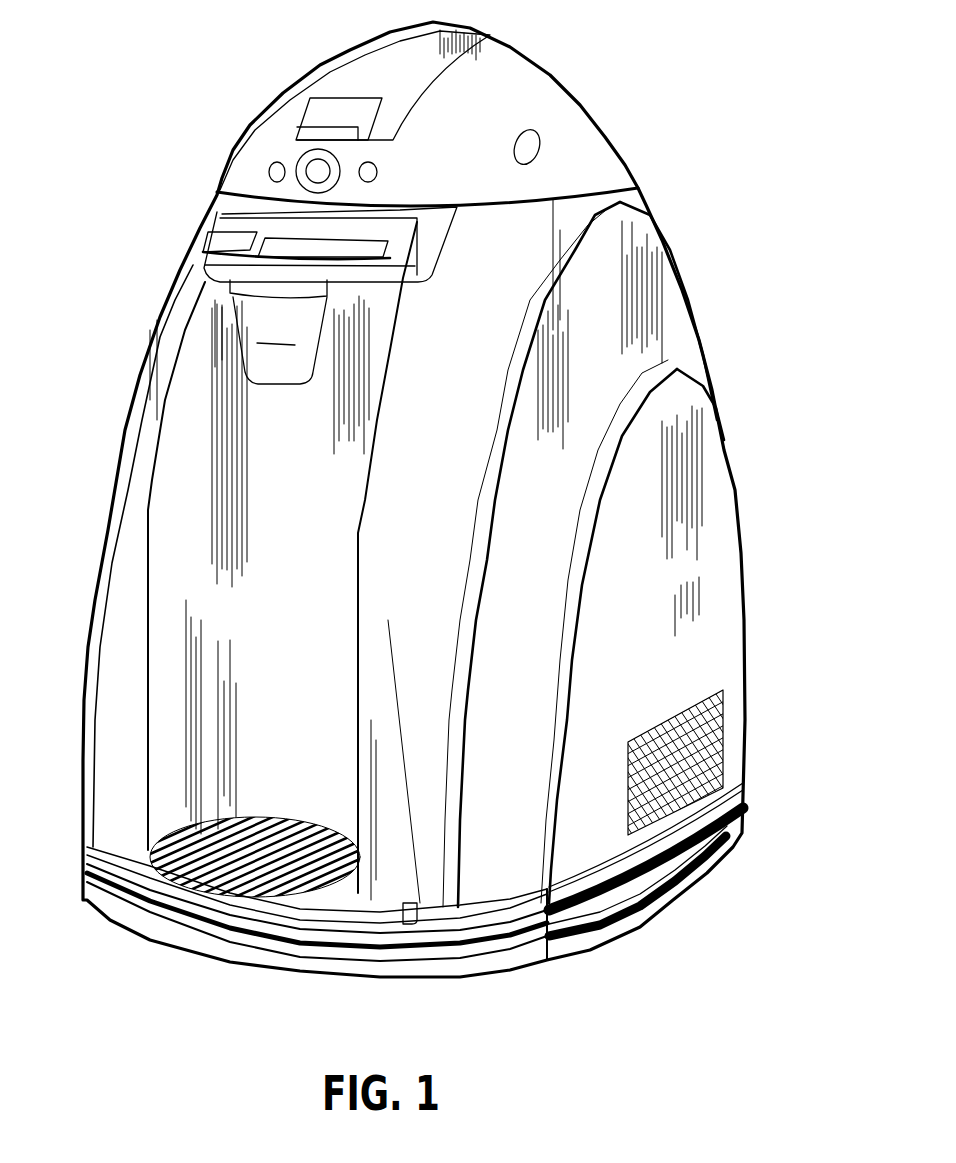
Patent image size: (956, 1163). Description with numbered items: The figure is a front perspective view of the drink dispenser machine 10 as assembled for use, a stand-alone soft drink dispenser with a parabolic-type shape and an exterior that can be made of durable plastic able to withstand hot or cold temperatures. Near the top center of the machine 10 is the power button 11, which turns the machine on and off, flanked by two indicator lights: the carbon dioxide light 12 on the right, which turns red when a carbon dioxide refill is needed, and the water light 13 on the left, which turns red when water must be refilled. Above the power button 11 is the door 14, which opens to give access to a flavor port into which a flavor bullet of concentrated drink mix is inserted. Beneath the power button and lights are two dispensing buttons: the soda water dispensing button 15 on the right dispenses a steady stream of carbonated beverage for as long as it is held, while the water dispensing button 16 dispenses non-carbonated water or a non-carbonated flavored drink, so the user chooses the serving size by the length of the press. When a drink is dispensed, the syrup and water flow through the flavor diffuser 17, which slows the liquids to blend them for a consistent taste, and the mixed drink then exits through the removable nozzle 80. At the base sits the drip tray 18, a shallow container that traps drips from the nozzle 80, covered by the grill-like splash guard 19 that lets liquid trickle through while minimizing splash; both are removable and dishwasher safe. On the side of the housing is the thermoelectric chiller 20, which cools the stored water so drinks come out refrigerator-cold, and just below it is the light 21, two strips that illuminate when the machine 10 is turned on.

The drink dispenser machine 10 is at (772, 59).
The power button 11 is at (315, 168).
The carbon dioxide light 12 is at (377, 171).
The water light 13 is at (268, 171).
The door 14 is at (330, 108).
The soda water dispensing button 15 is at (262, 250).
The water dispensing button 16 is at (213, 235).
The flavor diffuser 17 is at (242, 285).
The nozzle 80 is at (256, 352).
The drip tray 18 is at (130, 894).
The splash guard 19 is at (294, 863).
The thermoelectric chiller 20 is at (724, 722).
The light 21 is at (746, 808).